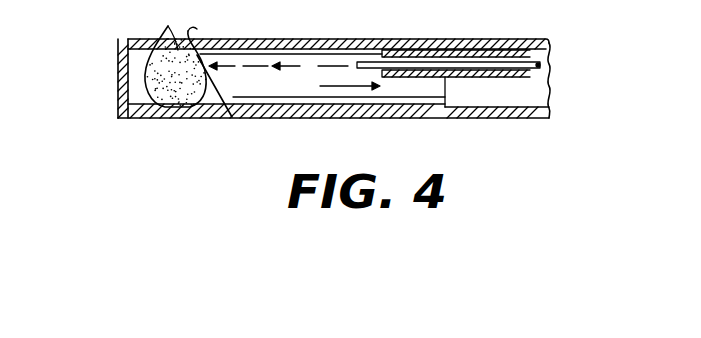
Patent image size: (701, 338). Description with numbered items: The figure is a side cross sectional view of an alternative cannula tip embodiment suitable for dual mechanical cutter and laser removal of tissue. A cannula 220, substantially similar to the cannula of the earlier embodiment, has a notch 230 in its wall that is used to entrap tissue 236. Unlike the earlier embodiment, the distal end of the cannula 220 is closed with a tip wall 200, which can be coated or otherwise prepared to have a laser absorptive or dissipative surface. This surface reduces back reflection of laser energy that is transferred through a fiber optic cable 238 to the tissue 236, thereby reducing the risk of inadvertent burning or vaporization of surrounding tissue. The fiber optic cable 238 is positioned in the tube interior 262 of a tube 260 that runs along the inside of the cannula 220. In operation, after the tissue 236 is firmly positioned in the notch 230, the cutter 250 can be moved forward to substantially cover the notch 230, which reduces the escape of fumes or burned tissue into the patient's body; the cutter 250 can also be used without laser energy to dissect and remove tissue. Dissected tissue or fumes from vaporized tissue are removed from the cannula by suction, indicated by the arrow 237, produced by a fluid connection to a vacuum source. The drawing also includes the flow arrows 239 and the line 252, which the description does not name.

The tip wall 200 is at (366, 78).
The cannula 220 is at (333, 59).
The notch 230 is at (212, 37).
The tissue 236 is at (158, 75).
The arrow 237 is at (354, 88).
The fiber optic cable 238 is at (540, 64).
The exhaust gas flow 239 is at (258, 63).
The cutter 250 is at (316, 62).
The baffle 252 is at (222, 92).
The tube 260 is at (500, 58).
The tube interior 262 is at (555, 68).